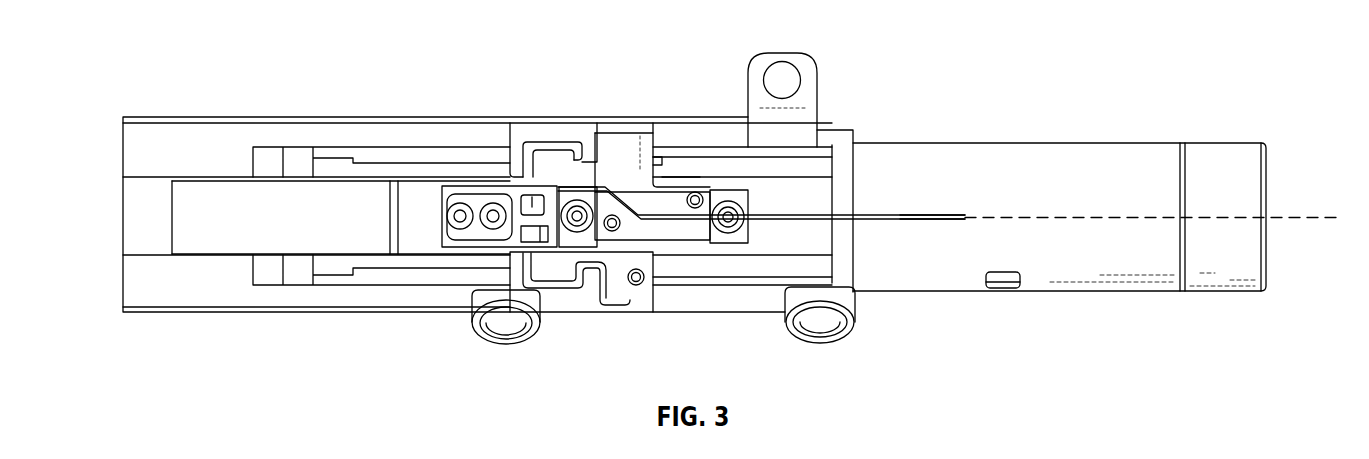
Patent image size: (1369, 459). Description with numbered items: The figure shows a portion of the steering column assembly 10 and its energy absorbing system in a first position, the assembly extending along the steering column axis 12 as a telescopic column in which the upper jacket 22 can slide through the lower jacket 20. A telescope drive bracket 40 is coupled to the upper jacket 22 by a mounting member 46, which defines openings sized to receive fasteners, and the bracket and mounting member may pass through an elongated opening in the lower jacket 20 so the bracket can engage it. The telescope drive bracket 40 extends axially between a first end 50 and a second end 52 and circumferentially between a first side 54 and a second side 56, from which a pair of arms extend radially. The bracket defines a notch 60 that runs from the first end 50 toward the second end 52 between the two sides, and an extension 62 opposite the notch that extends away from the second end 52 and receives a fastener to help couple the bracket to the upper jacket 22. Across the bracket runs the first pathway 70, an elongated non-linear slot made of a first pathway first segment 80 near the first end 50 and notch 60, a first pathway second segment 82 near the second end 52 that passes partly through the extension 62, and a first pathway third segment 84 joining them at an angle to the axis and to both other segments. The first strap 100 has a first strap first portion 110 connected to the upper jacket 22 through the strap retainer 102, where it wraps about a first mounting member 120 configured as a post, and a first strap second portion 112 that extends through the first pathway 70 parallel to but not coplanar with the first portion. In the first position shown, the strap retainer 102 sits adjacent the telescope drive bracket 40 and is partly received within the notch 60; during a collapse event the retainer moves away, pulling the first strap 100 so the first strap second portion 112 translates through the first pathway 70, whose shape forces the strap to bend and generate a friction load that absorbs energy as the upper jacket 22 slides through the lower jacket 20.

The steering column assembly 10 is at (1105, 81).
The steering column axis 12 is at (1284, 213).
The lower jacket 20 is at (469, 113).
The upper jacket 22 is at (1021, 139).
The telescope drive bracket 40 is at (683, 111).
The mounting member 46 is at (735, 248).
The first end 50 is at (506, 158).
The second end 52 is at (667, 170).
The first side 54 is at (592, 316).
The second side 56 is at (546, 115).
The notch 60 is at (497, 306).
The extension 62 is at (686, 182).
The first pathway 70 is at (603, 183).
The first pathway first segment 80 is at (595, 223).
The first pathway second segment 82 is at (676, 224).
The first pathway third segment 84 is at (620, 231).
The first strap 100 is at (871, 210).
The strap retainer 102 is at (450, 179).
The first strap first portion 110 is at (533, 196).
The first strap second portion 112 is at (881, 222).
The first mounting member 120 is at (538, 196).